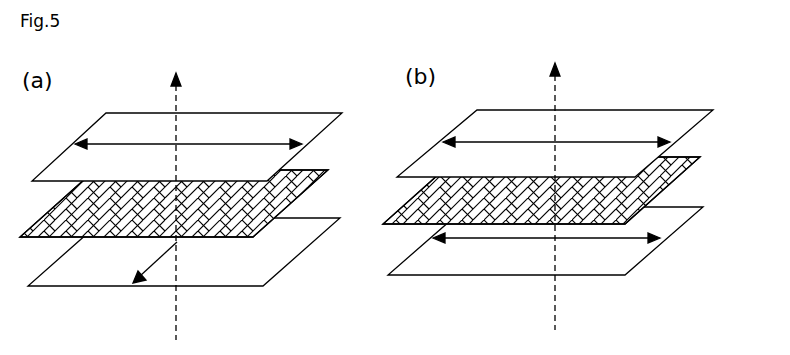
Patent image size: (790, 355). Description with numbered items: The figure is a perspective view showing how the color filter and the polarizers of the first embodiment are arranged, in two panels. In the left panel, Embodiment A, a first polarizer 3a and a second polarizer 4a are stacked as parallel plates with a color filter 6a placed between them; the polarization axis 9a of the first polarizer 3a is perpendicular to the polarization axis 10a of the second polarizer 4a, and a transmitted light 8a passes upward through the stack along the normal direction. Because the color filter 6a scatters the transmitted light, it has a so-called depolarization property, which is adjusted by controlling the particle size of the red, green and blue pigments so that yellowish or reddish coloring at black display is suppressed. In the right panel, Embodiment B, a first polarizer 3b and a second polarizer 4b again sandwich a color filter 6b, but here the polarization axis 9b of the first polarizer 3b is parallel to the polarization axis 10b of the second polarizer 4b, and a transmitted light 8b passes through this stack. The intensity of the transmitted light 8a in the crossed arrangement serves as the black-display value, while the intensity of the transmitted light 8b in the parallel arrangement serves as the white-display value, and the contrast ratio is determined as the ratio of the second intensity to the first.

The first polarizer 3a is at (287, 243).
The second polarizer 4a is at (305, 117).
The color filter 6a is at (320, 173).
The transmitted light 8a is at (176, 320).
The polarization axis 9a is at (203, 143).
The polarization axis 10a is at (160, 258).
The first polarizer 3b is at (670, 218).
The second polarizer 4b is at (687, 117).
The color filter 6b is at (678, 172).
The transmitted light 8b is at (556, 310).
The polarization axis 9b is at (575, 142).
The polarization axis 10b is at (638, 238).